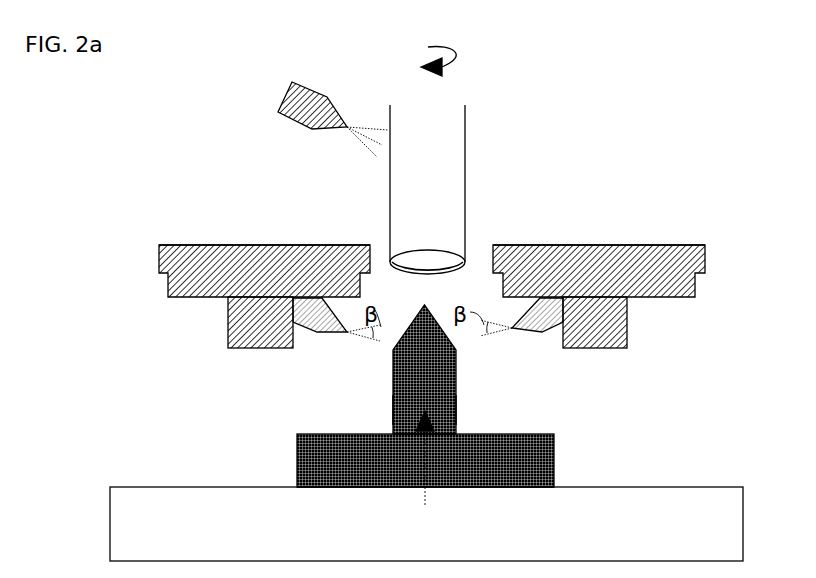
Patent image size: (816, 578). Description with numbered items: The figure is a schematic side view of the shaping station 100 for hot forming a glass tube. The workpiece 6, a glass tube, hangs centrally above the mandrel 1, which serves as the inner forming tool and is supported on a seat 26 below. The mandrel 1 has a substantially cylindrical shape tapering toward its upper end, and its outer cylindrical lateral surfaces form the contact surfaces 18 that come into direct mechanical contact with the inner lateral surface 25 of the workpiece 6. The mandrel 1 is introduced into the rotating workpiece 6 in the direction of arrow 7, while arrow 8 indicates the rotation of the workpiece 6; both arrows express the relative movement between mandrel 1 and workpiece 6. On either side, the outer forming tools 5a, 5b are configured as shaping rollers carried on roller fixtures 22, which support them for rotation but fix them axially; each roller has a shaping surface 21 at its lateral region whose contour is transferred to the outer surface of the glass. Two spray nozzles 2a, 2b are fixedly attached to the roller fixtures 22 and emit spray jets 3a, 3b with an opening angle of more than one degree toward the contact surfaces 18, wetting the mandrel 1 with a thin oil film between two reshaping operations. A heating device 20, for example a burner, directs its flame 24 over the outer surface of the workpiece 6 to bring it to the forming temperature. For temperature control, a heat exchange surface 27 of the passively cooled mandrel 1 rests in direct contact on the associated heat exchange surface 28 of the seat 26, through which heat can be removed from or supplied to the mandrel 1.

The shaping station 100 is at (627, 122).
The workpiece 6 is at (465, 168).
The inner lateral surface 25 is at (416, 268).
The arrow 8 is at (450, 58).
The heating device 20 is at (308, 112).
The flame 24 is at (363, 137).
The outer forming tool 5a is at (262, 270).
The outer forming tool 5b is at (660, 245).
The shaping surface 21 is at (159, 258).
The roller fixture 22 is at (228, 331).
The spray nozzle 2a is at (313, 327).
The spray nozzle 2b is at (525, 328).
The spray jet 3a is at (368, 353).
The spray jet 3b is at (489, 348).
The mandrel 1 is at (456, 376).
The contact surface 18 is at (393, 412).
The heat exchange surface 27 is at (538, 488).
The seat 26 is at (220, 502).
The heat exchange surface 28 is at (535, 489).
The arrow 7 is at (432, 473).